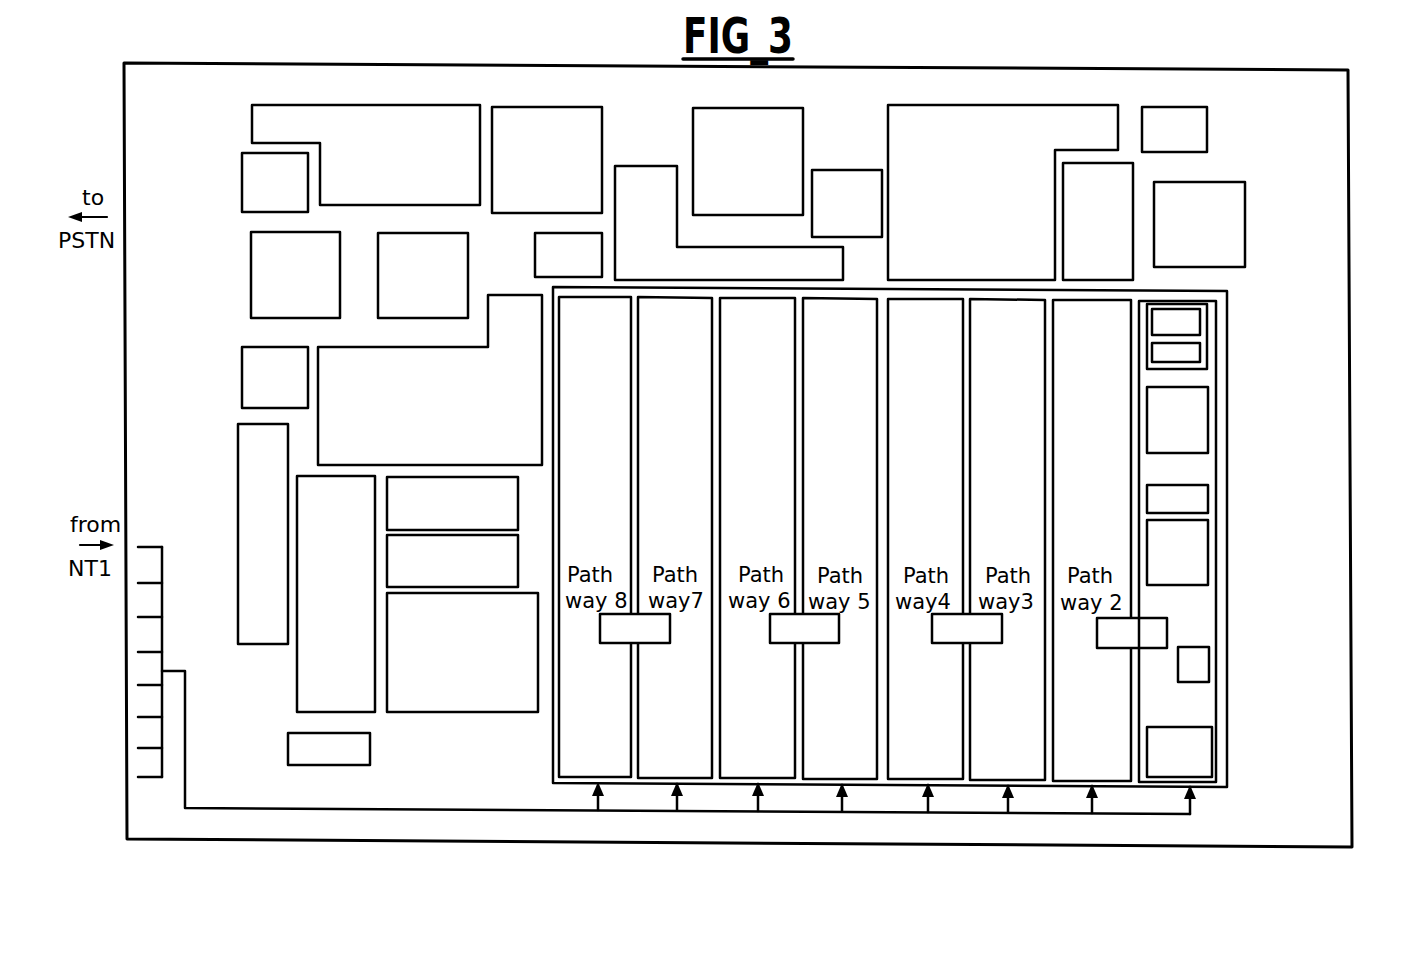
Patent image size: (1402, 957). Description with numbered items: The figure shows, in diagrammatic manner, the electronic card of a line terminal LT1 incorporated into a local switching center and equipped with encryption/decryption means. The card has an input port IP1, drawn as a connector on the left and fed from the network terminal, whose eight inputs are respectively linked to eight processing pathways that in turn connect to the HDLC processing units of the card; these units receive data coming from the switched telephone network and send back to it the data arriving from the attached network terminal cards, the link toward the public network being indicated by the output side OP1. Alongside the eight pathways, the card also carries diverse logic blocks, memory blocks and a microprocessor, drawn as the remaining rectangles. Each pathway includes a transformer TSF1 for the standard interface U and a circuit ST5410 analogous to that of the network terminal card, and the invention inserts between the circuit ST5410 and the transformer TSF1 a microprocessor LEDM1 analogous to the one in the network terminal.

The line terminal LT1 is at (1358, 160).
The output port to PSTN OP1 is at (152, 206).
The input port IP1 is at (168, 528).
The circuit ST5410 is at (1200, 321).
The microprocessor LEDM1 is at (1200, 352).
The transformer TSF1 is at (1197, 438).